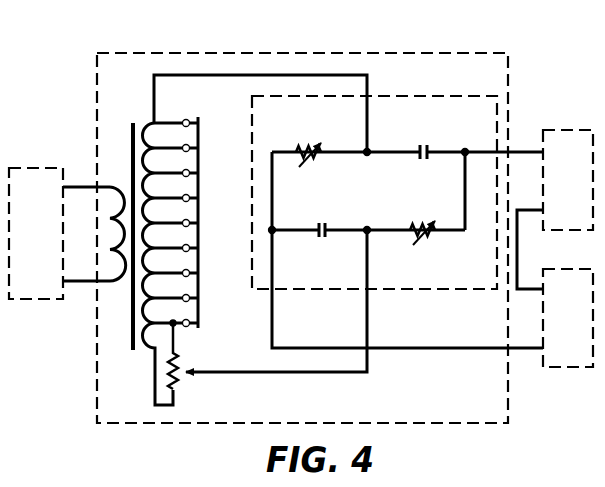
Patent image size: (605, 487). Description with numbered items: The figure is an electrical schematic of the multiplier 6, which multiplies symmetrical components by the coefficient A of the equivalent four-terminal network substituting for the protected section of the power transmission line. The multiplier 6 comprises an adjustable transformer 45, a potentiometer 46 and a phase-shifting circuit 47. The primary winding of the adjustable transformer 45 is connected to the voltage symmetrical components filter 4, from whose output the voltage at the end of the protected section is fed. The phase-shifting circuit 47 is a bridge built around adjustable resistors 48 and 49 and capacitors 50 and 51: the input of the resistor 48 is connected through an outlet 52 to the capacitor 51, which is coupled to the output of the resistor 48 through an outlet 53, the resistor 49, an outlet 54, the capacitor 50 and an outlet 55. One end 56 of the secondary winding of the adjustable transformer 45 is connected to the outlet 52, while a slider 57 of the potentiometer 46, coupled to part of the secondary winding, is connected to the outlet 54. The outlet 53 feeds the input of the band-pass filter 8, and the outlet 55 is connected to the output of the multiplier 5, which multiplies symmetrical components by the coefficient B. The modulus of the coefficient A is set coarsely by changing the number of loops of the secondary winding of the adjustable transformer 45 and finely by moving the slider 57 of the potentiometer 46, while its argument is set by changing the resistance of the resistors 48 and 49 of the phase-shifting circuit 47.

The voltage symmetrical components filter 4 is at (31, 166).
The multiplier 5 is at (573, 369).
The multiplier 6 is at (369, 51).
The band-pass filter 8 is at (567, 128).
The adjustable transformer 45 is at (124, 164).
The potentiometer 46 is at (178, 389).
The phase-shifting circuit 47 is at (438, 95).
The adjustable resistor 48 is at (303, 151).
The adjustable resistor 49 is at (416, 229).
The capacitor 50 is at (323, 226).
The capacitor 51 is at (424, 149).
The outlet 52 is at (370, 151).
The outlet 53 is at (466, 151).
The outlet 54 is at (368, 229).
The outlet 55 is at (275, 229).
The end of the secondary winding 56 is at (158, 122).
The slider 57 is at (190, 370).